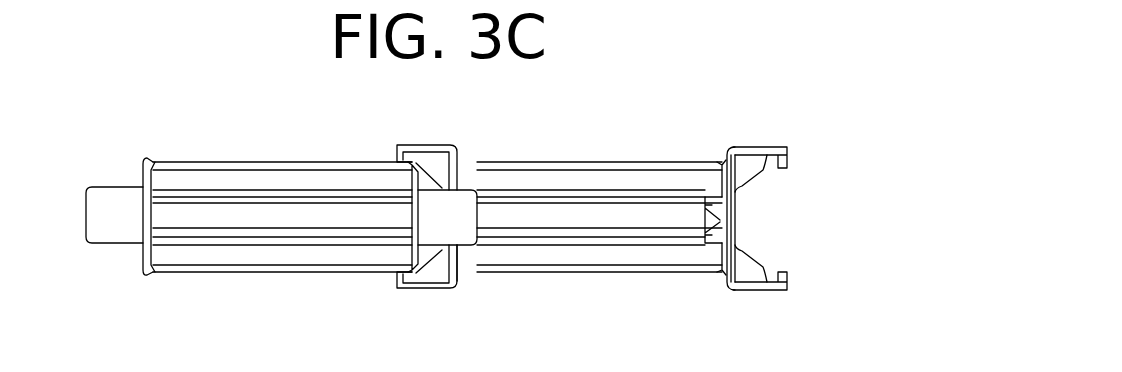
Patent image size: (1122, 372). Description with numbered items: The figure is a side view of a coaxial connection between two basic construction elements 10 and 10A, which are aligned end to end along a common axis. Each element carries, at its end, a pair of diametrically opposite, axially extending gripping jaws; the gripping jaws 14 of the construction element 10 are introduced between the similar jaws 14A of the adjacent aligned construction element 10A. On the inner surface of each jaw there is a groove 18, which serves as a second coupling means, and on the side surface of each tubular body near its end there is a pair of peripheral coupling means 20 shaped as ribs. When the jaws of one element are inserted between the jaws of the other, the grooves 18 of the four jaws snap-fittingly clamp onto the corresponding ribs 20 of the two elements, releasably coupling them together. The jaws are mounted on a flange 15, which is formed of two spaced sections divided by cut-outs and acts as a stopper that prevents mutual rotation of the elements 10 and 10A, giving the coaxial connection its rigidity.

The basic construction element 10 is at (605, 161).
The adjacent aligned construction element 10A is at (275, 160).
The gripping jaws 14 is at (427, 152).
The jaws of the adjacent construction element 14A is at (450, 212).
The flange 15 is at (453, 288).
The groove 18 is at (420, 273).
The peripheral coupling means 20 is at (717, 209).